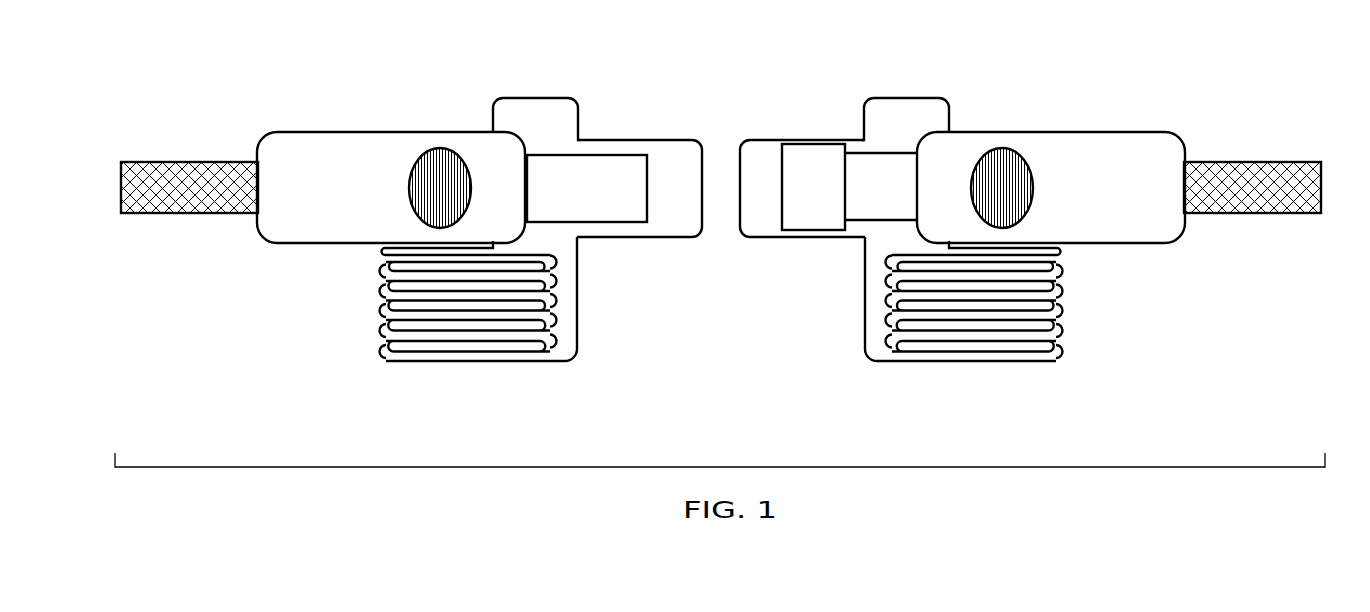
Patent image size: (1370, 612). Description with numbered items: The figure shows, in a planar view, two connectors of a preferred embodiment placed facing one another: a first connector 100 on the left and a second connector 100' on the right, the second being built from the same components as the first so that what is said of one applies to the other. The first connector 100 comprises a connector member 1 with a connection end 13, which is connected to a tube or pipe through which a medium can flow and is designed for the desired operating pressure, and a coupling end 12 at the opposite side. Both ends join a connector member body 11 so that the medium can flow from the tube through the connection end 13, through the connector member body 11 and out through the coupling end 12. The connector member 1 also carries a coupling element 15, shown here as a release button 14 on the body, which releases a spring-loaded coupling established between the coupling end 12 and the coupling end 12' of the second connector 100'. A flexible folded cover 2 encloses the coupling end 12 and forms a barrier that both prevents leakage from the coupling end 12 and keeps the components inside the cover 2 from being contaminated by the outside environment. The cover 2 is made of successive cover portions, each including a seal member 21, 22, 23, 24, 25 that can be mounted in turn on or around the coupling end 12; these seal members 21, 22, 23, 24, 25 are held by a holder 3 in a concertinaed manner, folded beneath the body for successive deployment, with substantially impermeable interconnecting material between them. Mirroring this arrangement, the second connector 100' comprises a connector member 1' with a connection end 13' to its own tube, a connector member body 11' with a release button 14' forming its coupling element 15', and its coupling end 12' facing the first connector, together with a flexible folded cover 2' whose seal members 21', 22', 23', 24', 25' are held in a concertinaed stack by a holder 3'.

The first connector 100 is at (411, 249).
The connector member 1 is at (411, 249).
The connector member body 11 is at (391, 189).
The coupling end 12 is at (587, 156).
The connection end 13 is at (189, 152).
The release button 14 is at (436, 159).
The coupling element 15 is at (614, 164).
The flexible folded cover 2 is at (544, 244).
The holder 3 is at (477, 346).
The seal member 21 is at (436, 363).
The seal member 22 is at (436, 322).
The seal member 23 is at (510, 317).
The seal member 24 is at (510, 294).
The seal member 25 is at (510, 271).
The second connector 100' is at (1030, 249).
The connector member 1' is at (1030, 249).
The connector member body 11' is at (1059, 189).
The coupling end 12' is at (847, 216).
The connection end 13' is at (1252, 152).
The release button 14' is at (996, 159).
The coupling element 15' is at (828, 189).
The flexible folded cover 2' is at (898, 229).
The holder 3' is at (1009, 346).
The seal member 21' is at (1009, 372).
The seal member 22' is at (1009, 347).
The seal member 23' is at (1009, 323).
The seal member 24' is at (1009, 299).
The seal member 25' is at (1009, 276).